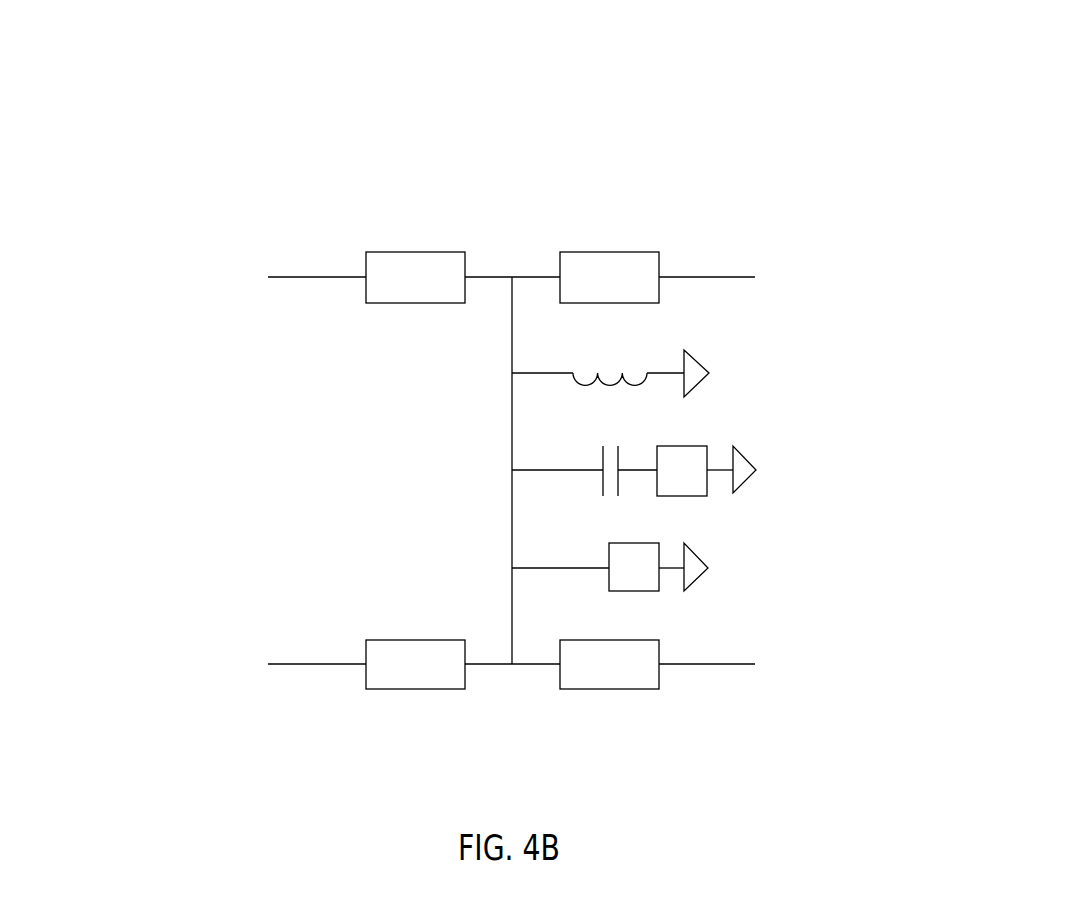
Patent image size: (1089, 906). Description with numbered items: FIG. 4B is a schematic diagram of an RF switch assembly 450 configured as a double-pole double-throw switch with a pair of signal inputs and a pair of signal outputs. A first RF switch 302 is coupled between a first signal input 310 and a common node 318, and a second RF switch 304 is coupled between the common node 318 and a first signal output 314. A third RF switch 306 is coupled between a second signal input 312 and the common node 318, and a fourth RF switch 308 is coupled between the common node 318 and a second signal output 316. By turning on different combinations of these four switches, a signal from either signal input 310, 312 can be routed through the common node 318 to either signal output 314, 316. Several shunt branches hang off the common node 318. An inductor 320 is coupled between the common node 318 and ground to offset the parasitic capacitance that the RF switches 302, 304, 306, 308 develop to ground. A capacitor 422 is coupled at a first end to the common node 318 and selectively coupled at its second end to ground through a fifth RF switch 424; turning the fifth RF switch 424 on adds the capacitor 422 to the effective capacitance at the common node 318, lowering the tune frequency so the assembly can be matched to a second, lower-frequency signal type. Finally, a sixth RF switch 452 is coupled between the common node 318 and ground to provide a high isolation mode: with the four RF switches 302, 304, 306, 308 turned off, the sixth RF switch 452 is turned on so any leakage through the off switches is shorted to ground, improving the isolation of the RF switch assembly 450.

The RF switch assembly 450 is at (940, 137).
The first signal input 310 is at (243, 276).
The second signal input 312 is at (243, 661).
The first signal output 314 is at (795, 276).
The second signal output 316 is at (795, 661).
The first RF switch 302 is at (415, 255).
The second RF switch 304 is at (609, 255).
The third RF switch 306 is at (415, 688).
The fourth RF switch 308 is at (609, 688).
The common node 318 is at (510, 438).
The inductor 320 is at (610, 365).
The capacitor 422 is at (584, 479).
The fifth RF switch 424 is at (706, 452).
The sixth RF switch 452 is at (610, 578).